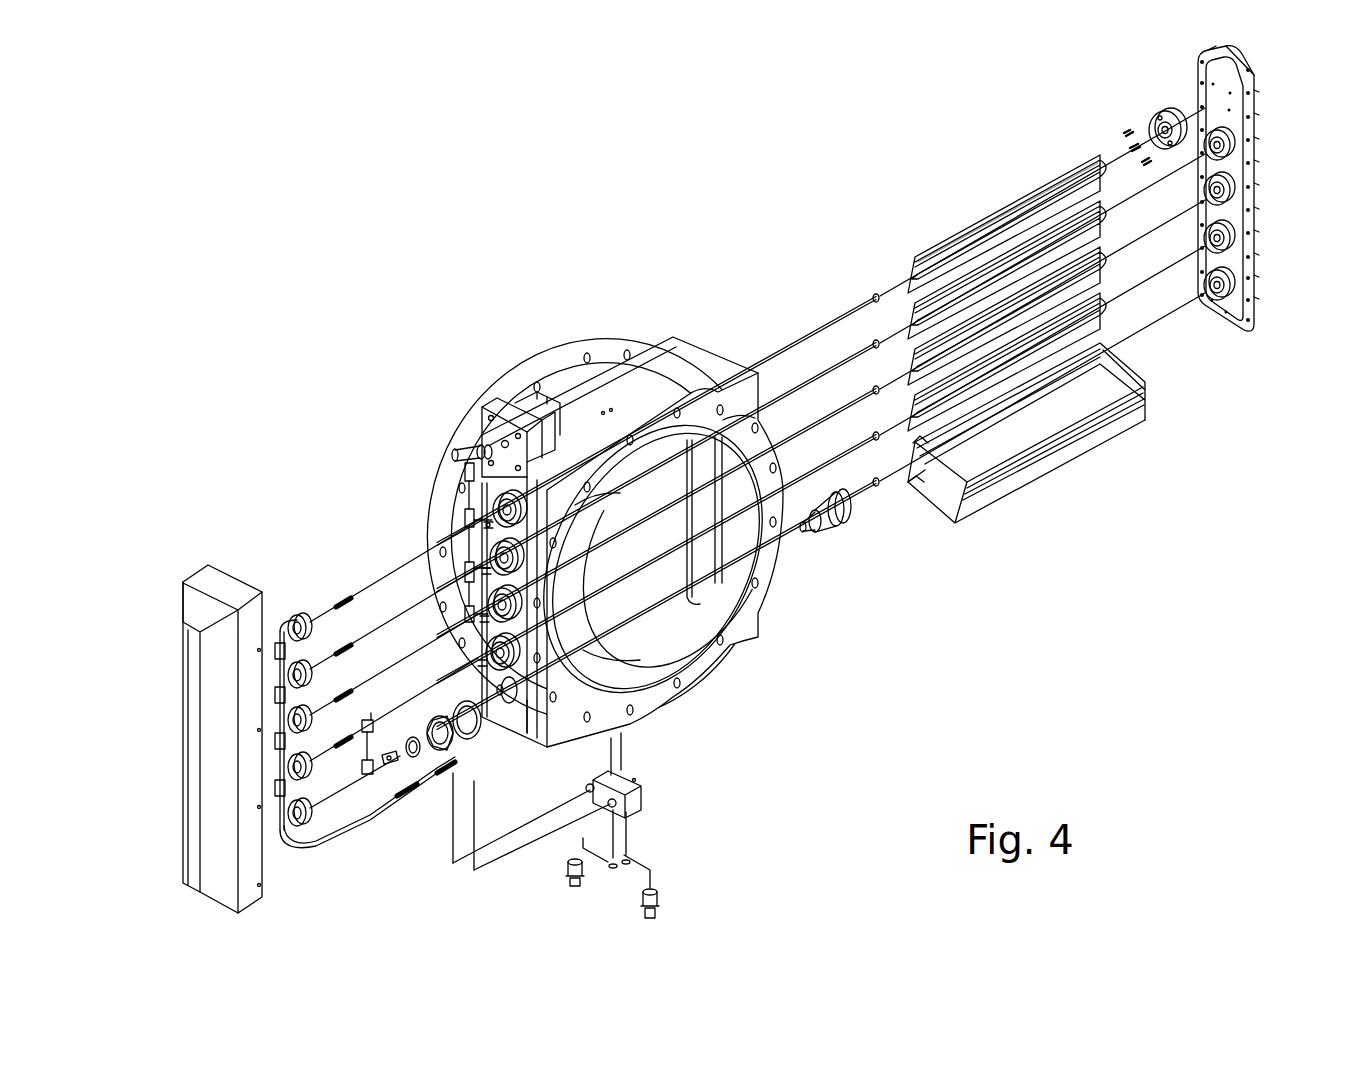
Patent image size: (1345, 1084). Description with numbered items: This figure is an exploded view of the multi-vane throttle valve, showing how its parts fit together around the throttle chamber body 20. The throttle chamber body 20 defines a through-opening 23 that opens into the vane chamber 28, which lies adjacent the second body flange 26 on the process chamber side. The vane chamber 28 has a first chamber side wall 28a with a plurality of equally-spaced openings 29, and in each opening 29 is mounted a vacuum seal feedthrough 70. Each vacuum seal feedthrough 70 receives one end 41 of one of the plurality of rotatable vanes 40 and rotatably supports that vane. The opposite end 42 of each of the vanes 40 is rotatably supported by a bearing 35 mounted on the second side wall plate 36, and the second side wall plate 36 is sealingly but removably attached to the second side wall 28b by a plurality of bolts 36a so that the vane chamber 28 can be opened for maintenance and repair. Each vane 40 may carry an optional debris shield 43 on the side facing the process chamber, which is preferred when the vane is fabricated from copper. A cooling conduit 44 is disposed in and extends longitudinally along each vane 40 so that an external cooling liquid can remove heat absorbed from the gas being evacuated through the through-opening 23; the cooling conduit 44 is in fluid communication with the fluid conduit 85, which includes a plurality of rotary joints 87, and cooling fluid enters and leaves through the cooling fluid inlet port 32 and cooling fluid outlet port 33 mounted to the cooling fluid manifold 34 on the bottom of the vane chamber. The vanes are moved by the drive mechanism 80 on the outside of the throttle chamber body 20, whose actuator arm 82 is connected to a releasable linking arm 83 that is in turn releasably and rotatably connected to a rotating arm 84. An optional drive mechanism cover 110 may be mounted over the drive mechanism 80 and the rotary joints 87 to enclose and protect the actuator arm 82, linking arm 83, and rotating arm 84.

The throttle chamber body 20 is at (565, 343).
The through-opening 23 is at (660, 617).
The second body flange 26 is at (710, 688).
The vane chamber 28 is at (655, 433).
The first chamber side wall 28a is at (513, 723).
The second side wall 28b is at (698, 460).
The opening 29 is at (506, 702).
The cooling fluid inlet port 32 is at (651, 918).
The cooling fluid outlet port 33 is at (574, 870).
The cooling fluid manifold 34 is at (636, 779).
The bearing 35 is at (1163, 112).
The second side wall plate 36 is at (1255, 100).
The bolts 36a is at (1259, 247).
The rotatable vanes 40 is at (960, 278).
The end of vane 41 is at (862, 341).
The opposite end of vane 42 is at (1097, 153).
The debris shield 43 is at (1040, 460).
The cooling conduit 44 is at (935, 483).
The vacuum seal feedthrough 70 is at (833, 528).
The drive mechanism 80 is at (468, 478).
The actuator arm 82 is at (478, 457).
The releasable linking arm 83 is at (470, 508).
The rotating arm 84 is at (482, 556).
The fluid conduit 85 is at (372, 815).
The rotary joints 87 is at (285, 825).
The drive mechanism cover 110 is at (191, 570).